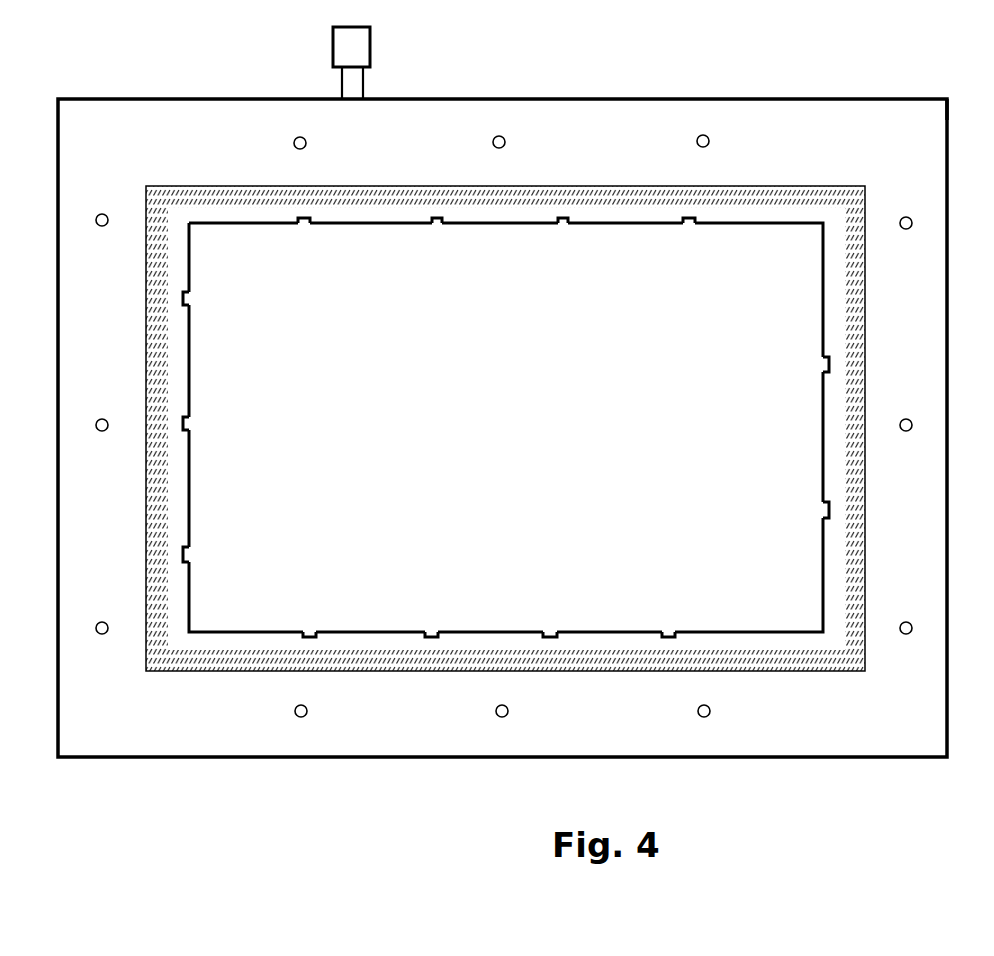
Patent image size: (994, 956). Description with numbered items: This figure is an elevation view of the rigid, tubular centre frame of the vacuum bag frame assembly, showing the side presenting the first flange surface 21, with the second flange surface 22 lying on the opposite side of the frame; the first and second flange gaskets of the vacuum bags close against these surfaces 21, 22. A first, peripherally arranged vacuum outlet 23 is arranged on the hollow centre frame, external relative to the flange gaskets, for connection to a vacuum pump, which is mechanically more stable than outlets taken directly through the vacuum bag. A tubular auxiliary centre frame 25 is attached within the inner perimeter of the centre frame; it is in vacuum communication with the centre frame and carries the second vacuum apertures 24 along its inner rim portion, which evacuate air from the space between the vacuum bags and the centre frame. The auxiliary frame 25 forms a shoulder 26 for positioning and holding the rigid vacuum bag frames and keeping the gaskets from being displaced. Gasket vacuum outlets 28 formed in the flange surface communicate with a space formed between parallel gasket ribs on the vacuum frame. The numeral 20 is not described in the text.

The mold frame assembly 20 is at (913, 177).
The first flange surface 21 is at (502, 395).
The second flange surface 22 is at (445, 143).
The first, peripherally arranged vacuum outlet 23 is at (355, 55).
The second vacuum apertures 24 is at (438, 228).
The auxiliary centre frame 25 is at (250, 218).
The shoulder 26 is at (632, 195).
The gasket vacuum outlets 28 is at (303, 149).